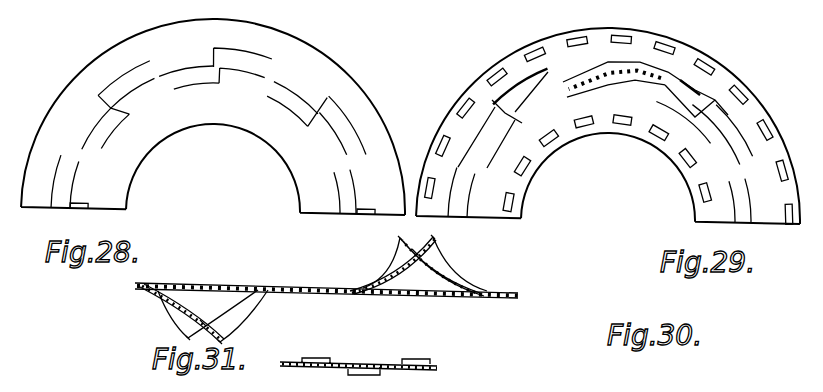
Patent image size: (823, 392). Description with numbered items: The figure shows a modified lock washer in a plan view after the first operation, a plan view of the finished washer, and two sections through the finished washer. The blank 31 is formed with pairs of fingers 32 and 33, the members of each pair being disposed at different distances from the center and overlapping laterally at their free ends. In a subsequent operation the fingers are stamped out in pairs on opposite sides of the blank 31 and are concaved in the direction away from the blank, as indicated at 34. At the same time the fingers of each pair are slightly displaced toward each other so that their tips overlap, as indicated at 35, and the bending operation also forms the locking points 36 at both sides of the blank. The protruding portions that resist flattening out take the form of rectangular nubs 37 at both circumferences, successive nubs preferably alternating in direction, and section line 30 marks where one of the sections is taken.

In FIG. 29, the raised tab / tent portion 30 is at (476, 158).
In FIG. 28, the blank 31 is at (338, 80).
In FIG. 29, the blank 31 is at (502, 62).
In FIG. 28, the finger 32 is at (197, 83).
In FIG. 29, the finger 32 is at (516, 133).
In FIG. 31, the finger 32 is at (190, 287).
In FIG. 28, the finger 33 is at (222, 58).
In FIG. 29, the finger 33 is at (522, 97).
In FIG. 31, the finger 33 is at (217, 305).
In FIG. 31, the concaved portion of fingers 34 is at (175, 315).
In FIG. 31, the overlap of finger tips 35 is at (203, 321).
In FIG. 31, the locking point 36 is at (188, 340).
In FIG. 29, the rectangular nub 37 is at (530, 50).
In FIG. 30, the rectangular nub 37 is at (410, 357).